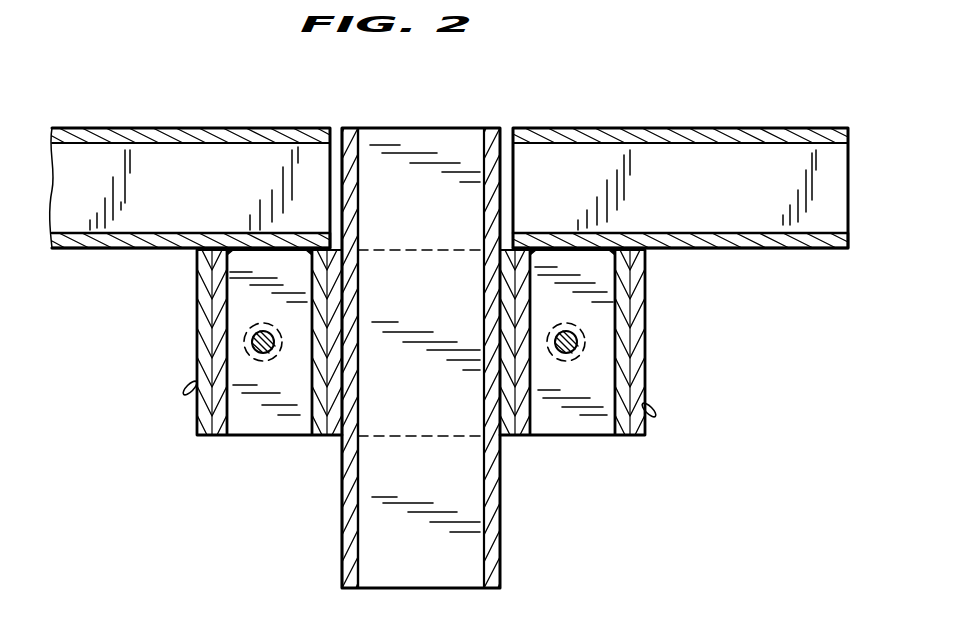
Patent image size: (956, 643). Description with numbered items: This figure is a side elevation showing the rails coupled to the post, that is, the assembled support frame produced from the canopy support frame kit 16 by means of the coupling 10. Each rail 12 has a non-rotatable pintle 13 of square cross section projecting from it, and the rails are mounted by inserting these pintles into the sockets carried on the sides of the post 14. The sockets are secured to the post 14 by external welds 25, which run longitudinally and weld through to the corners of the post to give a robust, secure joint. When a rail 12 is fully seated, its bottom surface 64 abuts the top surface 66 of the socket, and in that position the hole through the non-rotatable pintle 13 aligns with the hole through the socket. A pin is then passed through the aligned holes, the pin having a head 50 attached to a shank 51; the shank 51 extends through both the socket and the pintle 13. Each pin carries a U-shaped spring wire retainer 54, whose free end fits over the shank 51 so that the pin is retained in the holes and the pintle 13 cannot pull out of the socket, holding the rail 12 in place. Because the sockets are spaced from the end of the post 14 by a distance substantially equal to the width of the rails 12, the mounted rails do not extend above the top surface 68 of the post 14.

The coupling 10 is at (530, 98).
The rail 12 is at (170, 128).
The non-rotatable pintle 13 is at (243, 420).
The post 14 is at (501, 557).
The canopy support frame kit 16 is at (593, 460).
The external weld 25 is at (336, 436).
The head 50 is at (184, 406).
The shank 51 is at (275, 339).
The spring wire retainer 54 is at (192, 386).
The bottom surface 64 is at (125, 248).
The top surface 66 is at (207, 248).
The top surface 68 is at (353, 128).